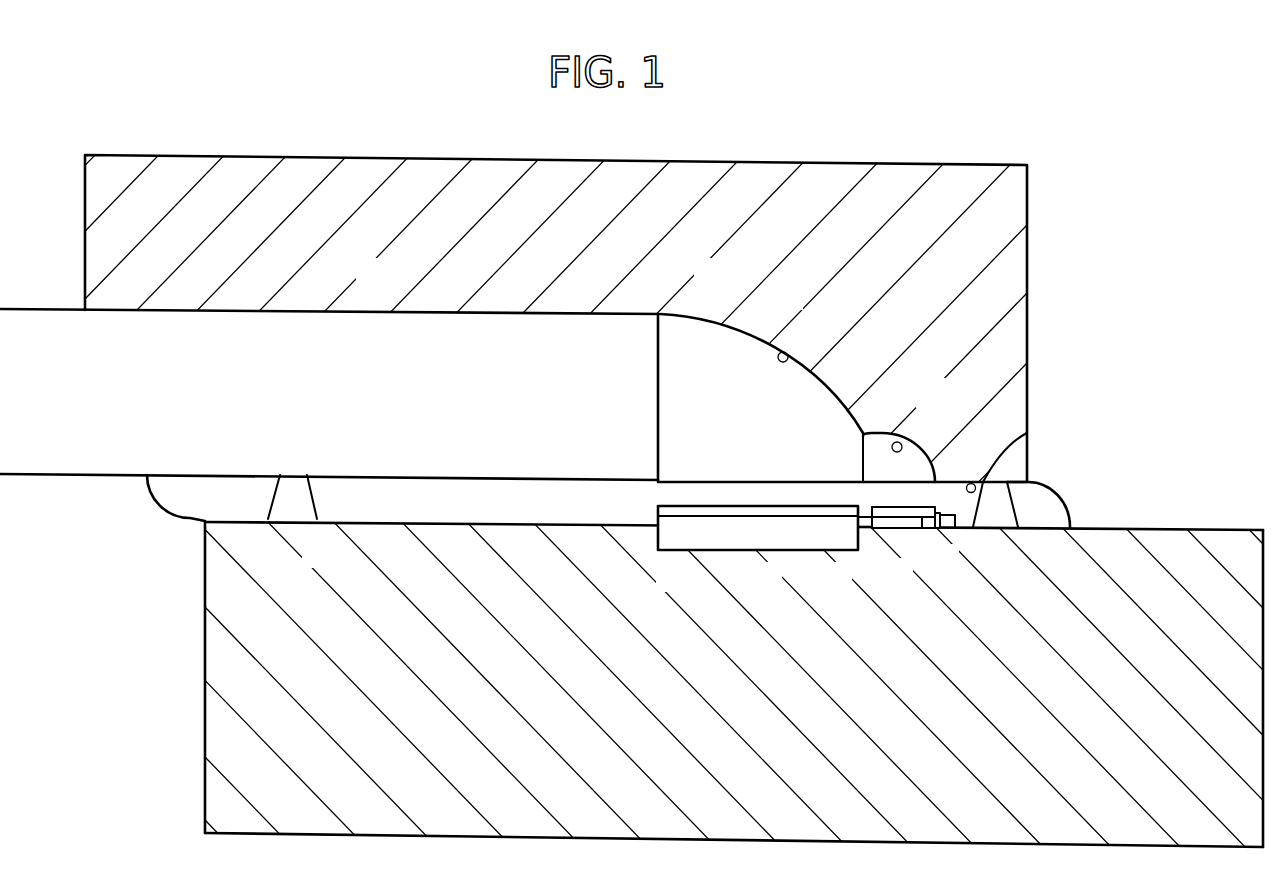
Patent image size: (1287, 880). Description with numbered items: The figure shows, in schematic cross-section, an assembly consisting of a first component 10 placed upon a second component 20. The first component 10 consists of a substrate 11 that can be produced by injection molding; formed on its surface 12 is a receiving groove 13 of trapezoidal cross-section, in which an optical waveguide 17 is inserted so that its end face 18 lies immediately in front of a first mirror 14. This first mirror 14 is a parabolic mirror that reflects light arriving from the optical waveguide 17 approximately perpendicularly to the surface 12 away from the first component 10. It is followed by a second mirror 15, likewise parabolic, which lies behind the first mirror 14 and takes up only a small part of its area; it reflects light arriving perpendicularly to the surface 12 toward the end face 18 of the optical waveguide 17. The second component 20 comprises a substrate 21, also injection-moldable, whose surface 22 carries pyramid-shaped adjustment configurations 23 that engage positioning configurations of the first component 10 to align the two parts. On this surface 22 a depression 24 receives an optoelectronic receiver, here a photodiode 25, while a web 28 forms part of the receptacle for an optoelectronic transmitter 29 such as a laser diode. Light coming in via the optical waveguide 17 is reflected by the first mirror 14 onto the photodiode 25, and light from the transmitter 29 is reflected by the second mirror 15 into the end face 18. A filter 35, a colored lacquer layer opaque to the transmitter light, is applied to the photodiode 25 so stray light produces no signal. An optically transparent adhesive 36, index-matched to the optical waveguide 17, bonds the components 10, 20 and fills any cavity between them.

The first component 10 is at (1038, 222).
The substrate 11 is at (487, 183).
The surface 12 is at (1028, 431).
The receiving groove 13 is at (405, 321).
The first mirror 14 is at (786, 351).
The second mirror 15 is at (902, 441).
The optical waveguide 17 is at (55, 452).
The end face 18 is at (664, 357).
The second component 20 is at (195, 697).
The substrate 21 is at (747, 790).
The surface 22 is at (1180, 531).
The adjustment configurations 23 is at (296, 498).
The depression 24 is at (706, 542).
The photodiode 25 is at (748, 532).
The web 28 is at (870, 529).
The optoelectronic transmitter 29 is at (917, 528).
The filter 35 is at (822, 511).
The adhesive 36 is at (178, 496).